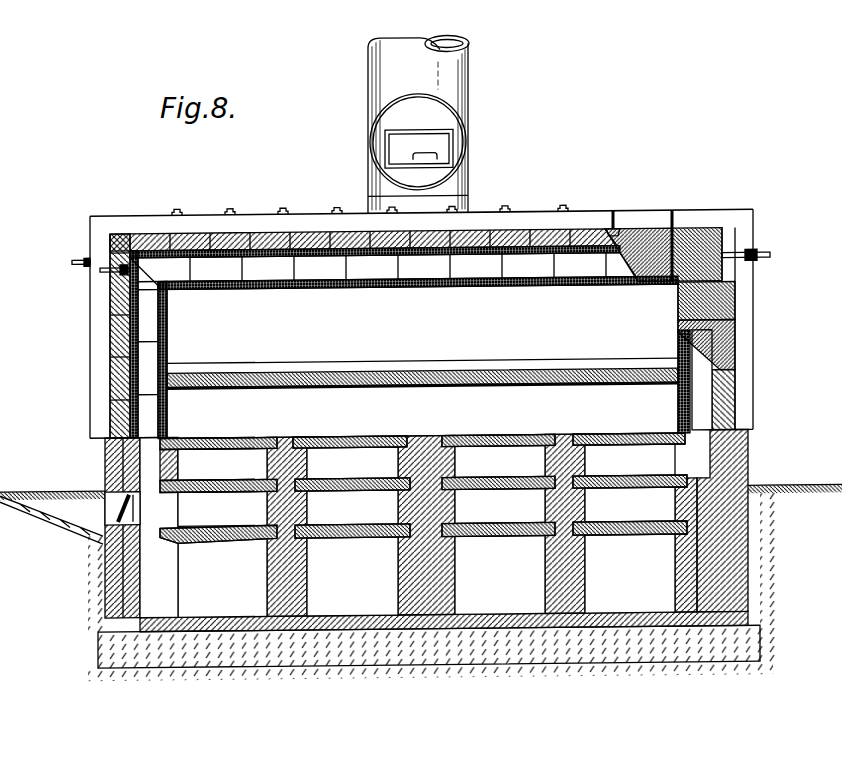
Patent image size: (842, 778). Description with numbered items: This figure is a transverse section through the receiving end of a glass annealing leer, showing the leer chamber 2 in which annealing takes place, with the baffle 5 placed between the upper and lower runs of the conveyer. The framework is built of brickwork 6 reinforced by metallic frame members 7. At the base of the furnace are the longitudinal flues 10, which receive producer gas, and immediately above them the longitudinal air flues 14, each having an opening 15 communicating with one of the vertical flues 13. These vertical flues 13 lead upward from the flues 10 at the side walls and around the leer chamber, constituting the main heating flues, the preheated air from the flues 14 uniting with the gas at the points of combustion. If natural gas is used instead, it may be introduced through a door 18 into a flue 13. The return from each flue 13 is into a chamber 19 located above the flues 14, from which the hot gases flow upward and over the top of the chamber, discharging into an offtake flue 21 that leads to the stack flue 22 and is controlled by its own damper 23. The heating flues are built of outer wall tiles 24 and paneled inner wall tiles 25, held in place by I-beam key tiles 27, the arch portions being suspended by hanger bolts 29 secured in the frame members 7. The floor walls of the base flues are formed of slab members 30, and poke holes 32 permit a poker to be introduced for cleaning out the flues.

The leer chamber 2 is at (422, 361).
The baffle 5 is at (400, 387).
The brickwork 6 is at (112, 373).
The metallic frame members 7 is at (697, 222).
The longitudinal flues 10 is at (465, 556).
The vertical flues 13 is at (708, 443).
The longitudinal flues 14 is at (423, 509).
The opening 15 is at (165, 506).
The doors 18 is at (118, 490).
The chamber 19 is at (426, 462).
The offtake flue 21 is at (468, 186).
The stack flue 22 is at (435, 118).
The controlling damper 23 is at (468, 197).
The outer wall tiles 24 is at (735, 400).
The inner wall tiles 25 is at (680, 404).
The key tiles 27 is at (735, 333).
The hanger bolts 29 is at (614, 209).
The floor slab members 30 is at (527, 436).
The poke holes 32 is at (108, 257).